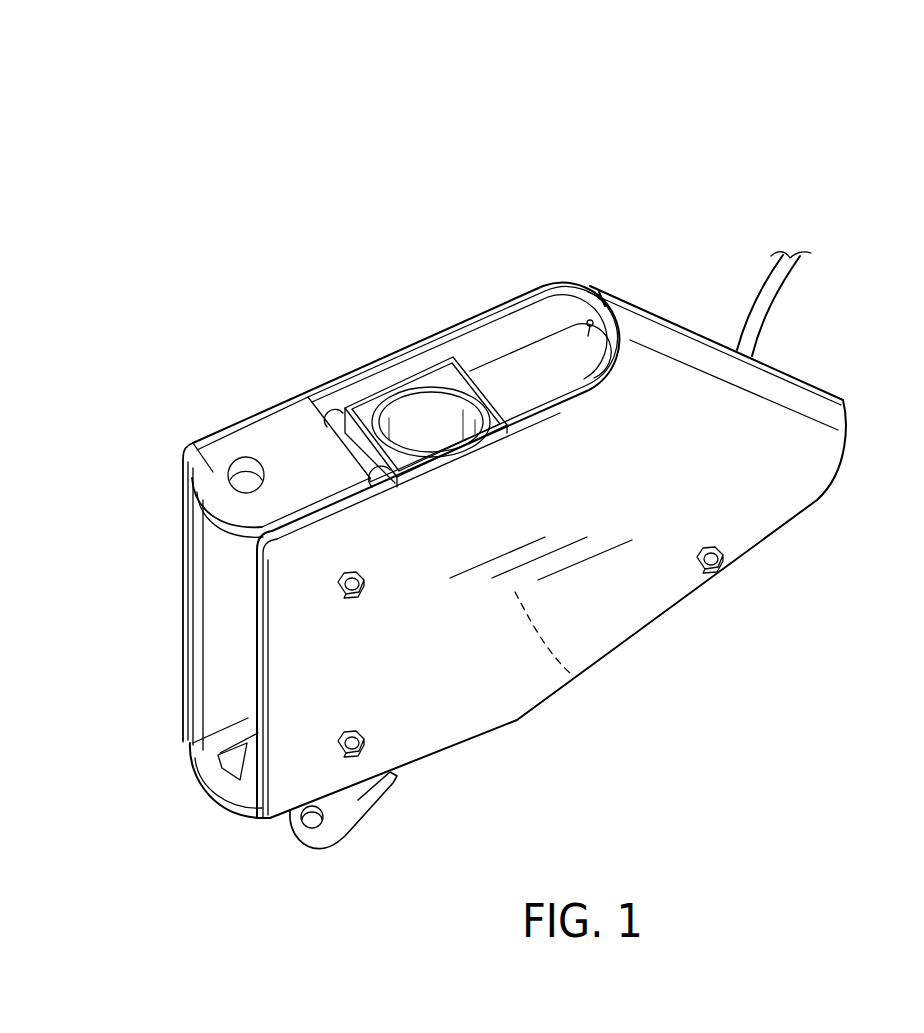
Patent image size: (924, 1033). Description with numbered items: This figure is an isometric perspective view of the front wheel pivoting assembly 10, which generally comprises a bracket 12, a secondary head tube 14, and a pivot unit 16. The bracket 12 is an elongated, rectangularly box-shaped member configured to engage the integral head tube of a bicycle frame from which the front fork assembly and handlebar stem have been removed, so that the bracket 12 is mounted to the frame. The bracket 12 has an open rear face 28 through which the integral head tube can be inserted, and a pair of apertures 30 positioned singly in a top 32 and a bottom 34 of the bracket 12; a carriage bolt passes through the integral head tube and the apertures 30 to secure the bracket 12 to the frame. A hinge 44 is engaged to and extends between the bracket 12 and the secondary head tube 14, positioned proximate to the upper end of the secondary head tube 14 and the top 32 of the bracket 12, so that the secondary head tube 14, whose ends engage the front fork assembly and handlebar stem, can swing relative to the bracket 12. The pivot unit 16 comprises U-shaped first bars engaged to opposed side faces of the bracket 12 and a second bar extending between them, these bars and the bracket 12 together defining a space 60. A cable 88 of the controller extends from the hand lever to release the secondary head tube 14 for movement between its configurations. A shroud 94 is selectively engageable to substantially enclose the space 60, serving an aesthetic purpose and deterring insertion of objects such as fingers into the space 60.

The front wheel pivoting assembly 10 is at (667, 148).
The bracket 12 is at (273, 430).
The secondary head tube 14 is at (441, 375).
The pivot unit 16 is at (444, 515).
The rear face 28 is at (222, 587).
The apertures 30 is at (247, 487).
The top 32 is at (193, 443).
The bottom 34 is at (205, 800).
The hinge 44 is at (345, 413).
The space 60 is at (577, 680).
The cable 88 is at (783, 287).
The shroud 94 is at (597, 570).